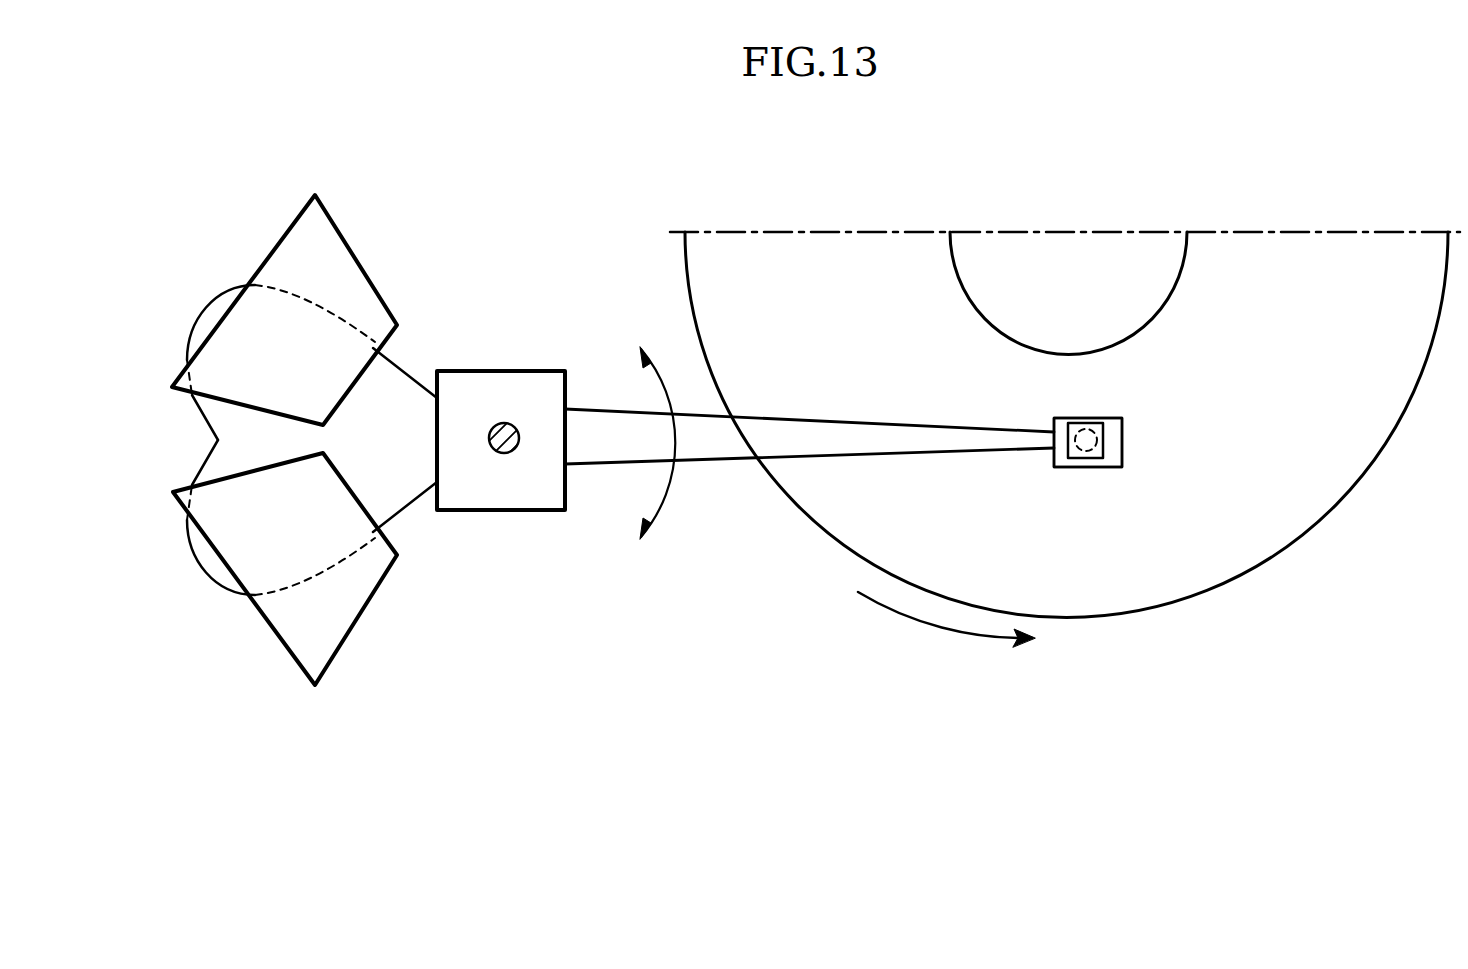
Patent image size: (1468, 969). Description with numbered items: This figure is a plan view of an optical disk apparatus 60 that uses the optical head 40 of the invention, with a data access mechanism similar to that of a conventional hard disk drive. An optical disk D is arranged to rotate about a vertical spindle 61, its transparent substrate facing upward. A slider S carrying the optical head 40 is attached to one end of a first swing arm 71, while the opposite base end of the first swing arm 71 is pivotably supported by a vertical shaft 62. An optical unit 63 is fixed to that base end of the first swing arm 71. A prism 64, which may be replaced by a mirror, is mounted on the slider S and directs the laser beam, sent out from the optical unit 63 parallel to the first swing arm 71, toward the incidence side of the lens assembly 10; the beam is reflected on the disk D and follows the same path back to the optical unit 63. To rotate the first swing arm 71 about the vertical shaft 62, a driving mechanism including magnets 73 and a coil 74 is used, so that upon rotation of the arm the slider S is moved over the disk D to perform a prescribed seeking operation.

The lens assembly 10 is at (1073, 418).
The optical head 40 is at (1127, 440).
The optical disk apparatus 60 is at (634, 228).
The vertical spindle 61 is at (1187, 268).
The vertical shaft 62 is at (504, 455).
The optical unit 63 is at (497, 371).
The prism 64 is at (1087, 456).
The first swing arm 71 is at (630, 445).
The magnets 73 is at (358, 258).
The coil 74 is at (225, 467).
The slider S is at (1113, 418).
The optical disk D is at (1357, 448).